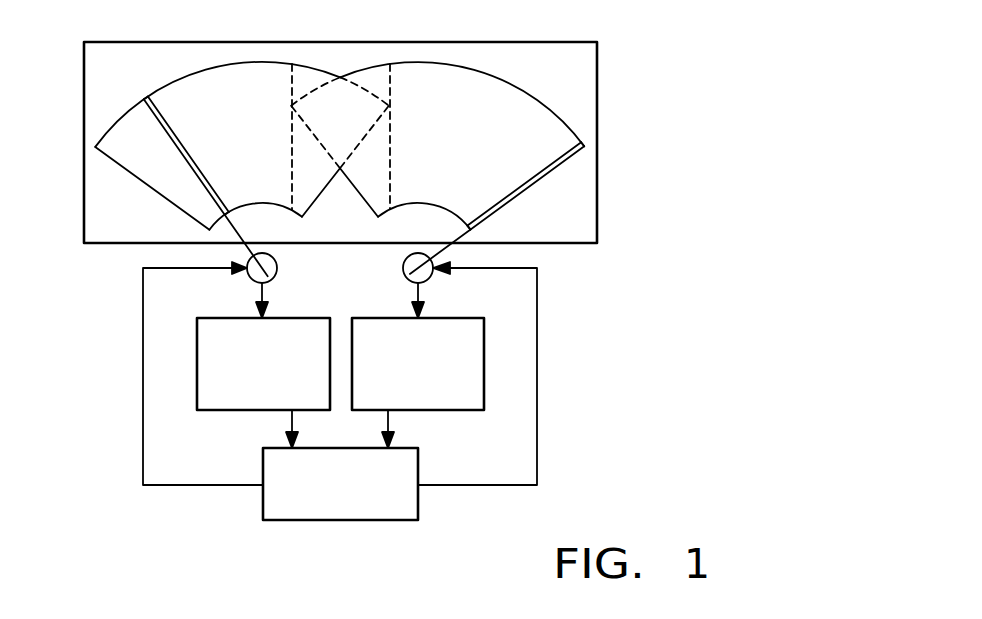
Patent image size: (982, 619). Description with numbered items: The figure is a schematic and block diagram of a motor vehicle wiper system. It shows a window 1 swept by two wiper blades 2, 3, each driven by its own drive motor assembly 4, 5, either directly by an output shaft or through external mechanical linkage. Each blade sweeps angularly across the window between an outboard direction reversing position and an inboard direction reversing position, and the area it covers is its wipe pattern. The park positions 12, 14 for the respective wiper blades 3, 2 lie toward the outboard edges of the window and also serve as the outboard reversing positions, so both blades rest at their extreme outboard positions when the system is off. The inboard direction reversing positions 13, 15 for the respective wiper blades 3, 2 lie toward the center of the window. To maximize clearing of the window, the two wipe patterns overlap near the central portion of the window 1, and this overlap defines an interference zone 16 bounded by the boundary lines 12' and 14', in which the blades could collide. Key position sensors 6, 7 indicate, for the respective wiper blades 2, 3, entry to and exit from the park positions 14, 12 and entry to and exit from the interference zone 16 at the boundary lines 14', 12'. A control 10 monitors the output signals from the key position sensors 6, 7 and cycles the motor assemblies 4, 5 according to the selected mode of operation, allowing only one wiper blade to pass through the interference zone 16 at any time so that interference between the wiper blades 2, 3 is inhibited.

The window 1 is at (553, 70).
The wiper blade 2 is at (158, 127).
The wiper blade 3 is at (567, 163).
The drive motor assembly 4 is at (272, 279).
The drive motor assembly 5 is at (408, 277).
The key position sensor 6 is at (205, 387).
The key position sensor 7 is at (477, 393).
The control 10 is at (270, 499).
The park position 12 is at (533, 208).
The boundary line 12' is at (431, 136).
The inboard direction reversing position 13 is at (368, 201).
The park position 14 is at (153, 186).
The boundary line 14' is at (258, 137).
The inboard direction reversing position 15 is at (313, 203).
The interference zone 16 is at (358, 97).